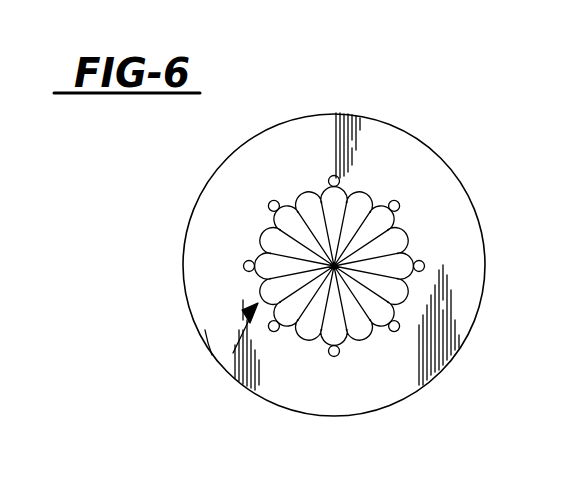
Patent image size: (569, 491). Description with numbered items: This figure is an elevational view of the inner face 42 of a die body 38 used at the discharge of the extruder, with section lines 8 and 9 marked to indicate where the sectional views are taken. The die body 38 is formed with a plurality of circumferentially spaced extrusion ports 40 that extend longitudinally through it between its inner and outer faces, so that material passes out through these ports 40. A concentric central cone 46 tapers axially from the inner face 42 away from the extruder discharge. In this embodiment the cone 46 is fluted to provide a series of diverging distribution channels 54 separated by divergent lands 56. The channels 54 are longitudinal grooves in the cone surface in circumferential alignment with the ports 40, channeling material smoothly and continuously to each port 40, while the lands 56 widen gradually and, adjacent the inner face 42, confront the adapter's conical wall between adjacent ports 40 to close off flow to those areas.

The section line 8- 8 is at (335, 176).
The section line 9- 9 is at (293, 487).
The die body 38 is at (416, 134).
The extrusion ports 40 is at (287, 217).
The inner face 42 is at (236, 361).
The central cone 46 is at (213, 355).
The distribution channels 54 is at (358, 200).
The lands 56 is at (303, 194).